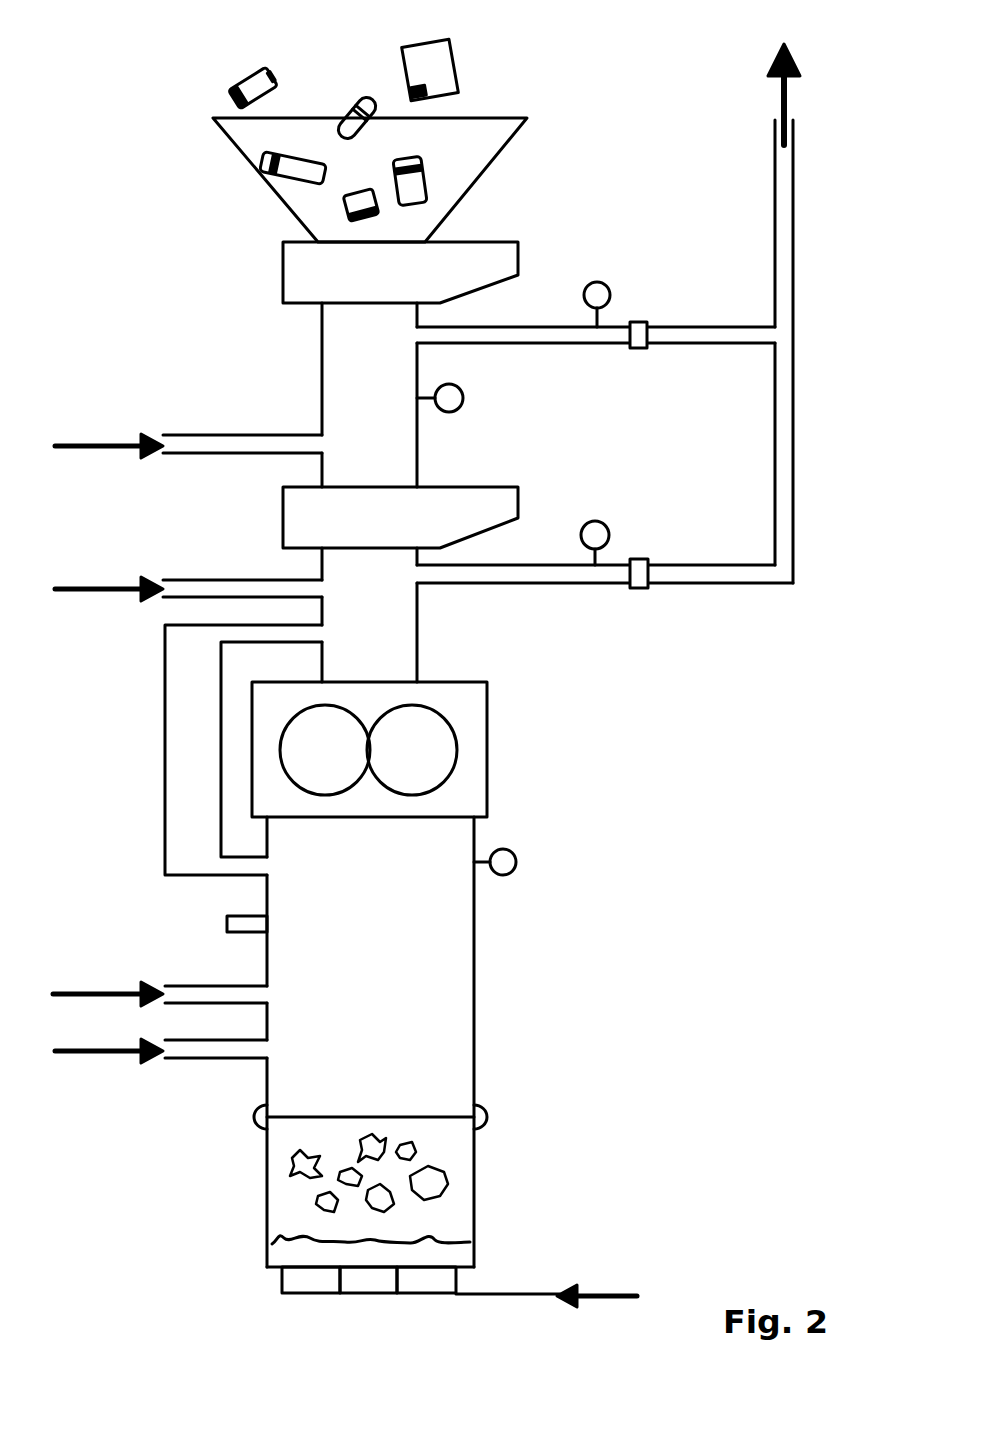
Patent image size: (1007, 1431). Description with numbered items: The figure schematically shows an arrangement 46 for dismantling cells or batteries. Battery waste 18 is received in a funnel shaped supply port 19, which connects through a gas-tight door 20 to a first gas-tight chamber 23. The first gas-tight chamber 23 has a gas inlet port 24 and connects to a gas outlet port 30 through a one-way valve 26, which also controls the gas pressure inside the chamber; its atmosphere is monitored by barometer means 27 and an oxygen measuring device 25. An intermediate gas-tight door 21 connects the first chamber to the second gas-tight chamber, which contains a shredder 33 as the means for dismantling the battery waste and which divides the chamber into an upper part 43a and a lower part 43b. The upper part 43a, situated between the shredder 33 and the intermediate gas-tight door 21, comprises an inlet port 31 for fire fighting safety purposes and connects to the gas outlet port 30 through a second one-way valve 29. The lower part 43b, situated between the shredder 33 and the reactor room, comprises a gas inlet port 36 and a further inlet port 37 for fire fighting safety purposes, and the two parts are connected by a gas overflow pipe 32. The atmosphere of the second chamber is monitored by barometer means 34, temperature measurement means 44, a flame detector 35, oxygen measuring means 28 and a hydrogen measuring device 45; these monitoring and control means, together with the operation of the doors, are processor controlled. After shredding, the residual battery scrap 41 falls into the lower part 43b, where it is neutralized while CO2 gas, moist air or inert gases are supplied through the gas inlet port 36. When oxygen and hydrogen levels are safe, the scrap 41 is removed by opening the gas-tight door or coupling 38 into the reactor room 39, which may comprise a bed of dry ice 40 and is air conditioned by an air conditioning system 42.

The battery waste 18 is at (405, 67).
The funnel shaped supply port 19 is at (266, 183).
The gas-tight door 20 is at (283, 283).
The intermediate gas-tight door 21 is at (518, 500).
The first gas-tight chamber 23 is at (372, 383).
The gas inlet port 24 is at (80, 440).
The oxygen measuring device 25 is at (607, 285).
The one-way valve 26 is at (637, 348).
The barometer means 27 is at (463, 403).
The oxygen measuring means 28 is at (590, 522).
The one-way valve 29 is at (640, 559).
The gas outlet port 30 is at (793, 205).
The inlet port 31 is at (85, 585).
The gas overflow pipe 32 is at (165, 737).
The shredder 33 is at (487, 713).
The barometer means 34 is at (516, 858).
The flame detector 35 is at (215, 926).
The gas inlet port 36 is at (190, 986).
The inlet port 37 is at (190, 1058).
The gas-tight door 38 is at (486, 1100).
The reactor room 39 is at (283, 1198).
The bed of dry ice 40 is at (283, 1257).
The battery scrap 41 is at (413, 1142).
The air conditioning system 42 is at (598, 1290).
The upper part of the second chamber 43a is at (383, 628).
The lower part of the second chamber 43b is at (383, 962).
The temperature measurement means 44 is at (510, 875).
The hydrogen measuring device 45 is at (605, 522).
The arrangement 46 is at (787, 1018).